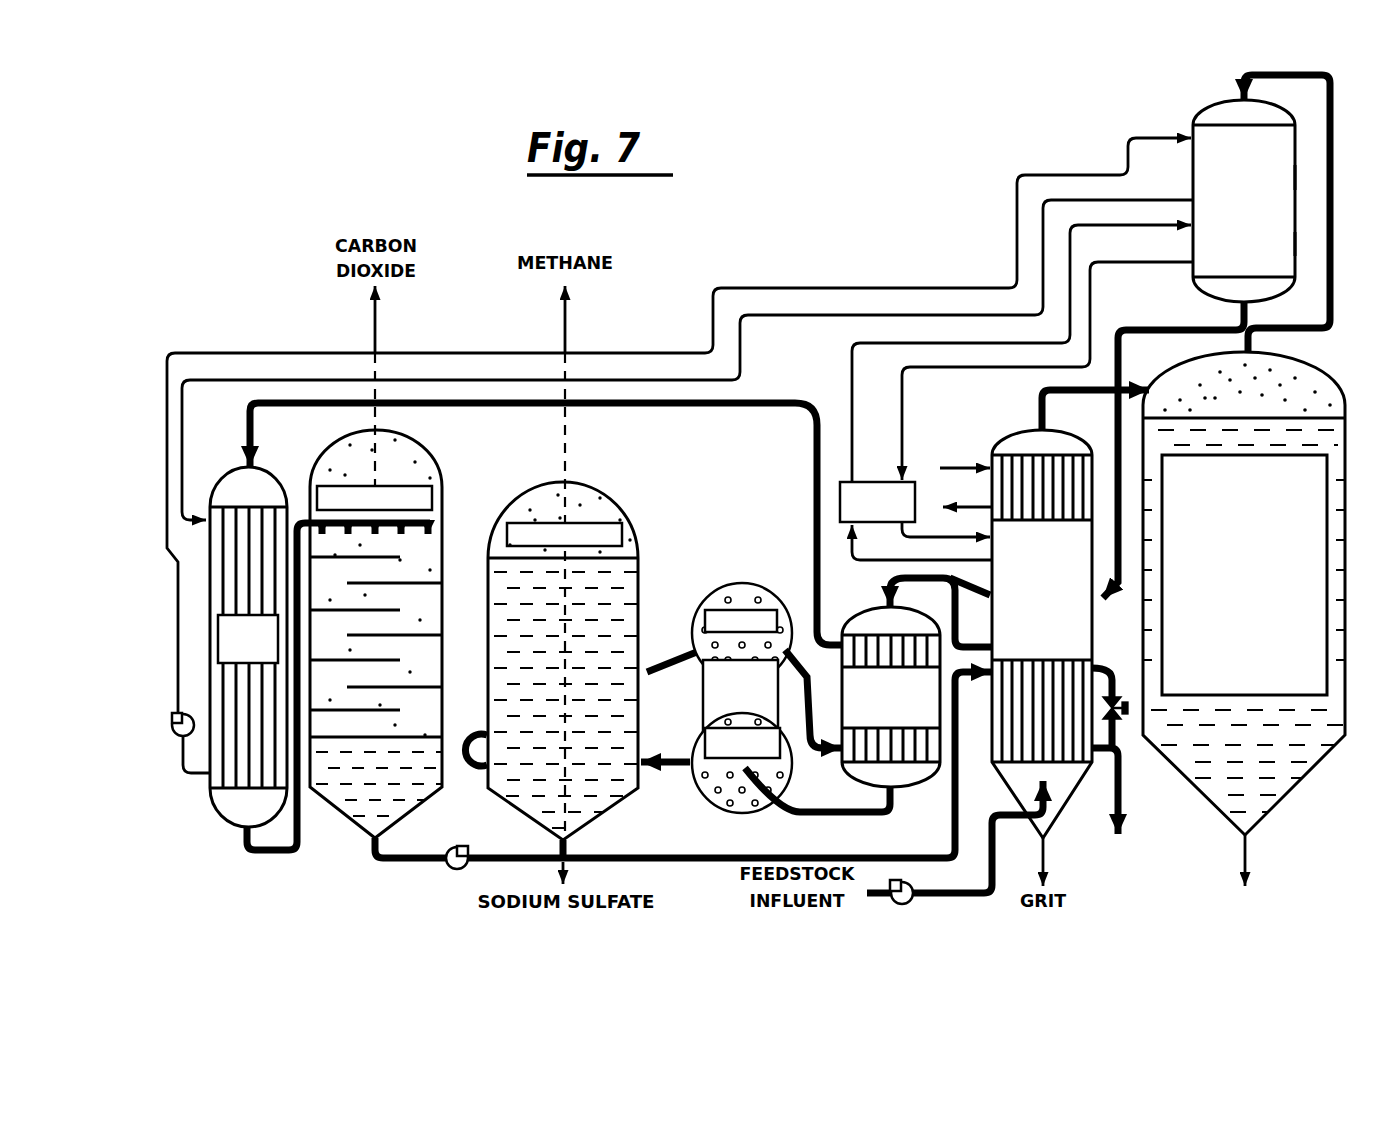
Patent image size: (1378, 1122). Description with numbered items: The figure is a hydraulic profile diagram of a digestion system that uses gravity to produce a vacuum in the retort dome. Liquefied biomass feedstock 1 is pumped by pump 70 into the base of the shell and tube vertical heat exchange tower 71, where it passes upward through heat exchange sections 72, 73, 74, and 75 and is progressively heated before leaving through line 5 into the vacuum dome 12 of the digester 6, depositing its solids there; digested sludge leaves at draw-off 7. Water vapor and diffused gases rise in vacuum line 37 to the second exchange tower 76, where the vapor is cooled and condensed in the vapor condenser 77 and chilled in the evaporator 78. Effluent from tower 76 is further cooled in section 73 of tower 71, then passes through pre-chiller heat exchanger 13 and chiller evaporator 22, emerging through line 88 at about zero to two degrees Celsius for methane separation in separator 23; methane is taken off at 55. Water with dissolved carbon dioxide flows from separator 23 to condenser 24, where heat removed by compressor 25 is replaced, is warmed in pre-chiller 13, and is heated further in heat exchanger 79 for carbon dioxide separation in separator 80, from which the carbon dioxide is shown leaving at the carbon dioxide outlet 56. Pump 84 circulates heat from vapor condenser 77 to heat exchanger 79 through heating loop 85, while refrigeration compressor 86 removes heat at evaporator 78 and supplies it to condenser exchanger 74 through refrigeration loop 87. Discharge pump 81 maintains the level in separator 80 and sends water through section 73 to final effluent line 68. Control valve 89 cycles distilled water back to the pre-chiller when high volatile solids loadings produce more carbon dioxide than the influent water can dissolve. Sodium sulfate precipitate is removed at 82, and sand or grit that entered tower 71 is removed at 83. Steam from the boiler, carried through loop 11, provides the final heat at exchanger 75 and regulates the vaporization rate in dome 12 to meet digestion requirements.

The liquefied biomass feedstock 1 is at (873, 901).
The line 5 is at (1098, 393).
The digester 6 is at (1308, 455).
The digested sludge draw-off 7 is at (1252, 860).
The steam loop 11 is at (952, 462).
The vacuum dome 12 is at (1178, 390).
The pre-chiller heat exchanger 13 is at (872, 625).
The chiller evaporator 22 is at (732, 788).
The separator 23 is at (622, 583).
The condenser 24 is at (746, 597).
The compressor 25 is at (718, 713).
The vacuum line 37 is at (1325, 302).
The methane take-off 55 is at (572, 338).
The carbon dioxide outlet 56 is at (382, 338).
The final effluent line 68 is at (1122, 805).
The pump 70 is at (913, 897).
The shell and tube vertical heat exchange tower 71 is at (1030, 780).
The heat exchange section 72 is at (1000, 703).
The heat exchange section 73 is at (1097, 620).
The condenser exchanger 74 is at (992, 524).
The heat exchange section 75 is at (1072, 477).
The exchange tower 76 is at (1220, 118).
The vapor condenser 77 is at (1278, 180).
The evaporator 78 is at (1278, 245).
The heat exchanger 79 is at (222, 492).
The separator 80 is at (422, 467).
The discharge pump 81 is at (470, 848).
The sodium sulfate removal 82 is at (575, 843).
The grit removal 83 is at (1047, 851).
The pump 84 is at (192, 711).
The heating loop 85 is at (767, 295).
The refrigeration compressor 86 is at (870, 478).
The refrigeration loop 87 is at (897, 378).
The line 88 is at (672, 770).
The control valve 89 is at (1115, 723).